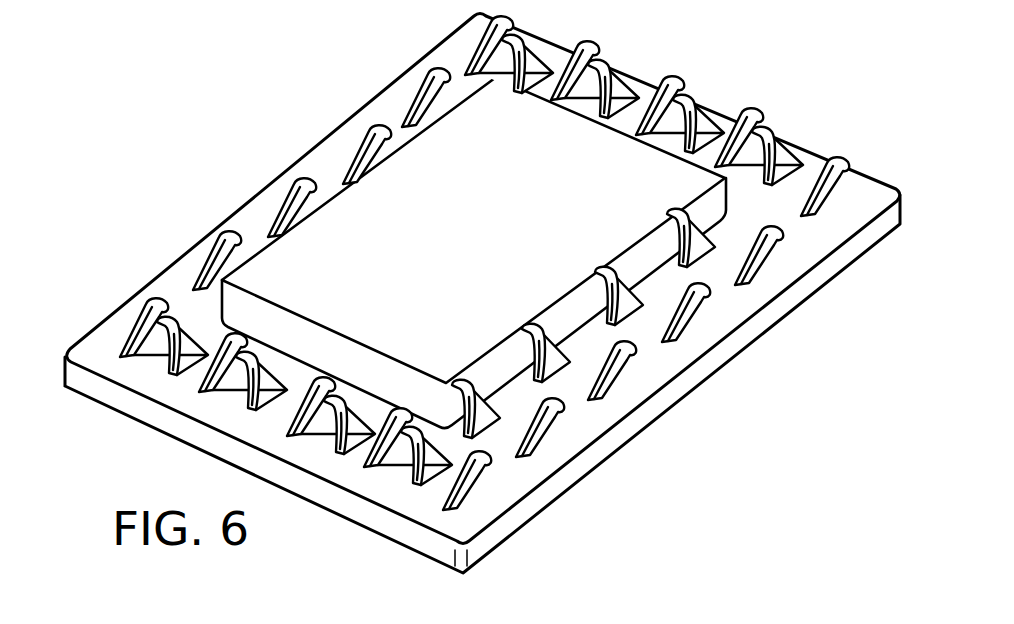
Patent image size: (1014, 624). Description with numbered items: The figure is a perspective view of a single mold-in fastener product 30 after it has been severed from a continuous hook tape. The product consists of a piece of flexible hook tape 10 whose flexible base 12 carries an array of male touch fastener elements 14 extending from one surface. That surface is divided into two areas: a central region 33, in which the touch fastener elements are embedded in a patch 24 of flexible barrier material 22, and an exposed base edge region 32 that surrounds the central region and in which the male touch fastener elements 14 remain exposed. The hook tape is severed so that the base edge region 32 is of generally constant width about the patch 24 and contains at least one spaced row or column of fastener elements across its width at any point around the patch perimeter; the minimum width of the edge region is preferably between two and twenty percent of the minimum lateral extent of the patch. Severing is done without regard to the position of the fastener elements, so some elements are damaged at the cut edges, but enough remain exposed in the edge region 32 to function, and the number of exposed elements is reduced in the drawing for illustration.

The flexible hook tape 10 is at (496, 287).
The flexible base 12 is at (745, 350).
The male touch fastener elements 14 is at (496, 256).
The flexible barrier material 22 is at (474, 234).
The patch of flexible barrier material 24 is at (473, 230).
The mold-in fastener product 30 is at (222, 134).
The exposed base edge region 32 is at (108, 290).
The central region 33 is at (474, 303).